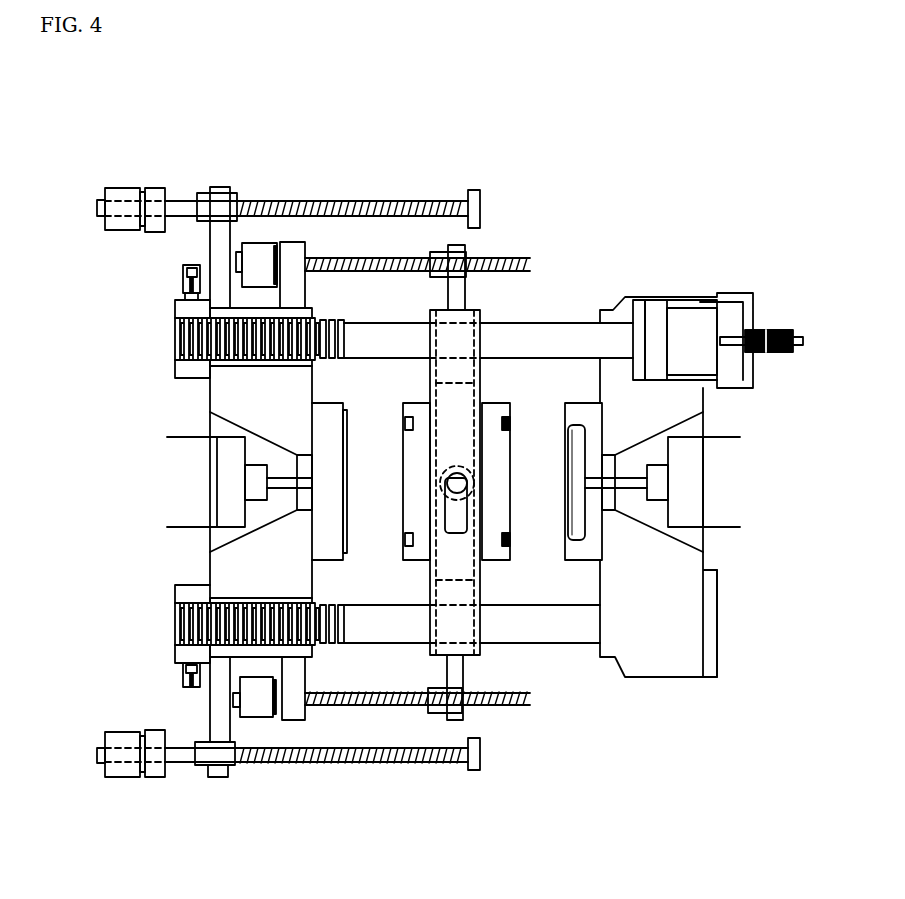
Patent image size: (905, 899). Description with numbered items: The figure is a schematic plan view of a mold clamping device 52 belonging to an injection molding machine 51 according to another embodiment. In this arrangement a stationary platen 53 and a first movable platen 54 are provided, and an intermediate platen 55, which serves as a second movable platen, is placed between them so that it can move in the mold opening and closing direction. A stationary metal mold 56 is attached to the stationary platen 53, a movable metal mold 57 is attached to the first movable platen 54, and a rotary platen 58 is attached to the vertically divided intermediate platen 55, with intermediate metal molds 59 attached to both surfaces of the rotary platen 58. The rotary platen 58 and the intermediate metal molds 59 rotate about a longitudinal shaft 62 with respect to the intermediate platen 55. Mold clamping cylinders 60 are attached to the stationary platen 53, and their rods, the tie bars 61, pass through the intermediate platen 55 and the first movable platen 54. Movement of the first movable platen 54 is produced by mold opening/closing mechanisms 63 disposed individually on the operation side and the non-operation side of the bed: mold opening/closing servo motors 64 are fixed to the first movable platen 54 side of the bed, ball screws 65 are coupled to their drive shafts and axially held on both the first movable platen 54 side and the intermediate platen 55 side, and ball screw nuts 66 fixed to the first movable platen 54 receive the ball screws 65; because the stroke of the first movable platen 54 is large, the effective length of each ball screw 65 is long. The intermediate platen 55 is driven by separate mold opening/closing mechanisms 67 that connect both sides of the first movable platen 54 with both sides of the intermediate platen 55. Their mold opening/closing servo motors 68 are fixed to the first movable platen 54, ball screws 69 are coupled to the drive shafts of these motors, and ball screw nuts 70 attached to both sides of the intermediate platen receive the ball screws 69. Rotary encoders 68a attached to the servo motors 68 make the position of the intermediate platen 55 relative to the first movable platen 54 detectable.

The injection molding machine 51 is at (628, 180).
The mold clamping device 52 is at (560, 248).
The stationary platen 53 is at (678, 678).
The first movable platen 54 is at (207, 570).
The intermediate platen 55 is at (463, 372).
The stationary metal mold 56 is at (566, 412).
The movable metal mold 57 is at (333, 410).
The rotary platen 58 is at (452, 403).
The intermediate metal molds 59 is at (405, 412).
The mold clamping cylinders 60 is at (668, 318).
The tie bars 61 is at (375, 345).
The longitudinal shaft 62 is at (470, 469).
The mold opening/closing mechanisms 63 is at (298, 200).
The mold opening/closing servo motors 64 is at (118, 188).
The ball screws 65 is at (340, 201).
The ball screw nuts 66 is at (212, 190).
The mold opening/closing mechanisms of the second movable platen 67 is at (388, 259).
The mold opening/closing servo motors 68 is at (250, 260).
The rotary encoders 68a is at (238, 263).
The ball screws 69 is at (326, 262).
The ball screw nuts 70 is at (452, 254).